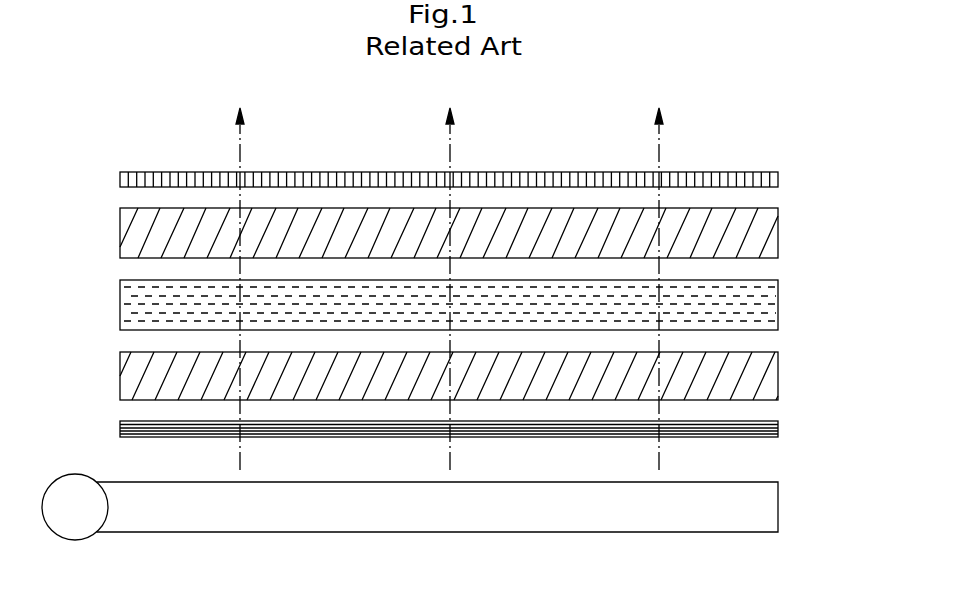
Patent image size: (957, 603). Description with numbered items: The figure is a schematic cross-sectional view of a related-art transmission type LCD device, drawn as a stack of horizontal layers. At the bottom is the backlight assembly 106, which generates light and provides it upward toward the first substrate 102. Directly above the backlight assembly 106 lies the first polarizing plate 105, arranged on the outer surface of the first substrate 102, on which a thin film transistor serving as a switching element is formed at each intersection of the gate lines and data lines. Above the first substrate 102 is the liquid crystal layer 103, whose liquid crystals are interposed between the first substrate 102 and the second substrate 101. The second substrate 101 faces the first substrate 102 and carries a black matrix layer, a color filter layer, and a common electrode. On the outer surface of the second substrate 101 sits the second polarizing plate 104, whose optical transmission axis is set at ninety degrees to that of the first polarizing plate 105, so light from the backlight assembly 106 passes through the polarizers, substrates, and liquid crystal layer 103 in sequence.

The second substrate 101 is at (778, 237).
The first substrate 102 is at (778, 378).
The liquid crystal layer 103 is at (778, 307).
The second polarizing plate 104 is at (778, 181).
The first polarizing plate 105 is at (778, 432).
The backlight assembly 106 is at (778, 509).